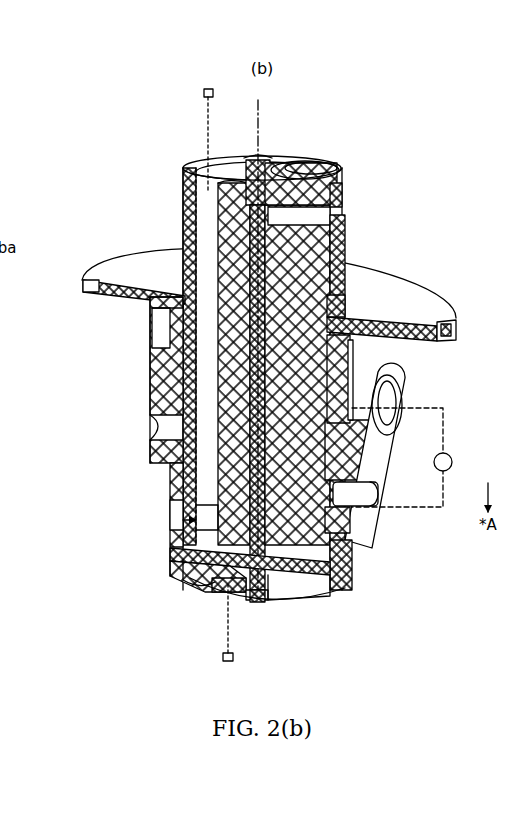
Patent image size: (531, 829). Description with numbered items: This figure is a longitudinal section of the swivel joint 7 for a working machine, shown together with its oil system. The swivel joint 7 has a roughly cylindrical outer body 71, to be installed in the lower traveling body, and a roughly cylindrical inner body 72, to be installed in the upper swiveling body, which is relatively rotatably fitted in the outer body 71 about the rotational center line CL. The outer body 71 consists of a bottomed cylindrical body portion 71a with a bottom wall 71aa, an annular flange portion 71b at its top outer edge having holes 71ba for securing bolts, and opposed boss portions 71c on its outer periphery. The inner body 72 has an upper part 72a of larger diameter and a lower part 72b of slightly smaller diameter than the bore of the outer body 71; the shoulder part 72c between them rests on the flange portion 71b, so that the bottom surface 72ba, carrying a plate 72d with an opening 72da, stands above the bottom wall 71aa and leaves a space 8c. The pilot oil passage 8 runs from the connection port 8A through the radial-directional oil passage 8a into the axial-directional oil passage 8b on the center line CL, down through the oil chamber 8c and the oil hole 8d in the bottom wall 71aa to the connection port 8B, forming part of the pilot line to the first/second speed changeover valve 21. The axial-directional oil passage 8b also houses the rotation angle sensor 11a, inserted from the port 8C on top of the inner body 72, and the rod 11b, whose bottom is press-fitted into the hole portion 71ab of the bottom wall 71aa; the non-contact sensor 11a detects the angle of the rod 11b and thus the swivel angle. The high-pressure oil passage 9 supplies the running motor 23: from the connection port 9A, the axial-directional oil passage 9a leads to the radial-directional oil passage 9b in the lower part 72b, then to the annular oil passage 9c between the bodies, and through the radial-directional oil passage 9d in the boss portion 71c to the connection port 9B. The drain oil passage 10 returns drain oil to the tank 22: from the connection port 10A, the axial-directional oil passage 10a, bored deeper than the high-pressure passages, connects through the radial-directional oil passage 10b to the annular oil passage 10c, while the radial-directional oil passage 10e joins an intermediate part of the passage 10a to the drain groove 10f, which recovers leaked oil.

The swivel joint 7 is at (358, 130).
The pilot oil passage 8 is at (165, 408).
The radial-directional oil passage 8a is at (330, 200).
The connection port 8A is at (332, 222).
The axial-directional oil passage 8b is at (210, 215).
The connection port 8B is at (222, 594).
The oil chamber 8c is at (205, 582).
The port for mounting a sensor 8C is at (283, 162).
The oil hole 8d is at (252, 600).
The high-pressure oil passage 9 is at (345, 228).
The axial-directional oil passage 9a is at (352, 357).
The connection port 9A is at (240, 162).
The radial-directional oil passage 9b is at (352, 548).
The connection port 9B is at (155, 430).
The annular oil passage 9c is at (158, 362).
The radial-directional oil passage 9d is at (360, 510).
The drain oil passage 10 is at (198, 190).
The axial-directional oil passage 10a is at (200, 200).
The connection port 10A is at (207, 164).
The radial-directional oil passage 10b is at (165, 557).
The annular oil passage 10c is at (185, 535).
The radial-directional oil passage 10e is at (158, 308).
The drain groove 10f is at (158, 333).
The rotation angle sensor 11a is at (247, 158).
The rod 11b is at (295, 600).
The first/second speed changeover valve 21 is at (222, 657).
The tank 22 is at (203, 93).
The running motor 23 is at (452, 462).
The outer body 71 is at (140, 458).
The body portion 71a is at (175, 495).
The bottom wall 71aa is at (330, 595).
The hole portion 71ab is at (273, 603).
The flange portion 71b is at (105, 275).
The holes 71ba is at (452, 326).
The boss portion 71c is at (158, 386).
The inner body 72 is at (136, 236).
The upper part 72a is at (343, 255).
The lower part 72b is at (345, 320).
The bottom surface 72ba is at (350, 568).
The shoulder part 72c is at (345, 300).
The plate 72d is at (305, 598).
The opening 72da is at (230, 592).
The rotational center line CL is at (262, 103).